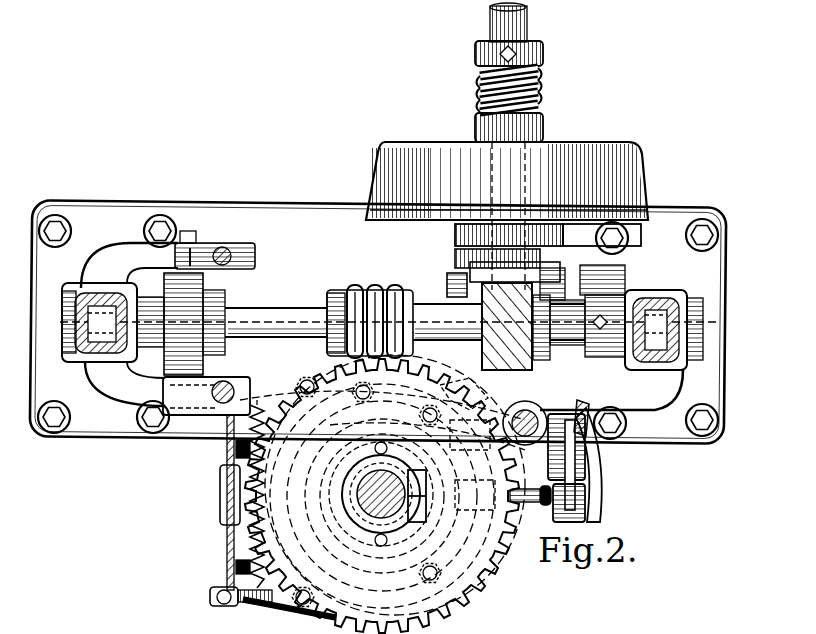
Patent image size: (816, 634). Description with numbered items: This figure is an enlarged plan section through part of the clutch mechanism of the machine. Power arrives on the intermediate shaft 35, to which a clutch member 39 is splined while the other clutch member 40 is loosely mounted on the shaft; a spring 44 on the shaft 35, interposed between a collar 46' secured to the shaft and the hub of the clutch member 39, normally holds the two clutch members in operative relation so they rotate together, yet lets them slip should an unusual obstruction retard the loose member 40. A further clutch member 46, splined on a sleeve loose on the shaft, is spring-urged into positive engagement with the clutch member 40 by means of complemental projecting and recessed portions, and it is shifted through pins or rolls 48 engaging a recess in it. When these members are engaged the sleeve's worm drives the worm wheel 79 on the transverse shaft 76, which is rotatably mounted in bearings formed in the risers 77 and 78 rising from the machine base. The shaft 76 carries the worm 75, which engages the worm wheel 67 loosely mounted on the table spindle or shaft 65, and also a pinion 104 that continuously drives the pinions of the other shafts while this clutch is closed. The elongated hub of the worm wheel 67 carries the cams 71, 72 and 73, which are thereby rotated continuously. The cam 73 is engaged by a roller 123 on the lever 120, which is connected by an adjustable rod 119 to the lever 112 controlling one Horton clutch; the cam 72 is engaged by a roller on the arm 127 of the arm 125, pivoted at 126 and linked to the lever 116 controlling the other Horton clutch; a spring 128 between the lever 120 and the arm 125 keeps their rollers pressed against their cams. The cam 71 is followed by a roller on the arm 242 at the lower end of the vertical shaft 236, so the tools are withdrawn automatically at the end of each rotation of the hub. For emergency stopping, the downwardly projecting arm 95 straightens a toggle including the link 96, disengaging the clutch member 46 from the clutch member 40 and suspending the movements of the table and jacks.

The intermediate shaft 35 is at (528, 25).
The collar 46' is at (534, 53).
The spring 44 is at (544, 102).
The clutch member 39 is at (644, 172).
The loose clutch member 40 is at (455, 232).
The clutch member 46 is at (464, 257).
The pins or rolls 48 is at (447, 283).
The worm wheel 79 is at (482, 320).
The worm 75 is at (366, 292).
The transverse shaft 76 is at (293, 318).
The pinion 104 is at (190, 265).
The lever 116 is at (232, 247).
The riser 77 is at (660, 290).
The riser 78 is at (95, 345).
The arm 125 is at (285, 388).
The cam 72 is at (430, 410).
The arm 242 is at (456, 382).
The vertical shaft 236 is at (580, 395).
The arm 127 is at (420, 430).
The downwardly projecting arm 95 is at (605, 445).
The link 96 is at (582, 500).
The lever 112 is at (225, 404).
The pivot 126 is at (225, 472).
The cam 71 is at (250, 500).
The table spindle or shaft 65 is at (252, 519).
The adjustable rod 119 is at (230, 535).
The spring 128 is at (250, 566).
The cam 73 is at (462, 548).
The roller 123 is at (440, 575).
The worm wheel 67 is at (470, 598).
The lever 120 is at (290, 605).